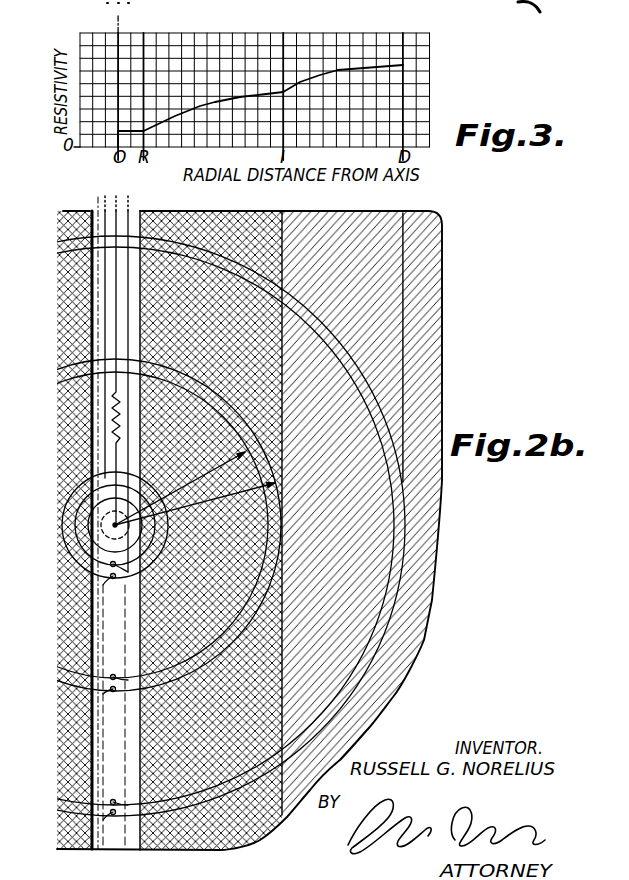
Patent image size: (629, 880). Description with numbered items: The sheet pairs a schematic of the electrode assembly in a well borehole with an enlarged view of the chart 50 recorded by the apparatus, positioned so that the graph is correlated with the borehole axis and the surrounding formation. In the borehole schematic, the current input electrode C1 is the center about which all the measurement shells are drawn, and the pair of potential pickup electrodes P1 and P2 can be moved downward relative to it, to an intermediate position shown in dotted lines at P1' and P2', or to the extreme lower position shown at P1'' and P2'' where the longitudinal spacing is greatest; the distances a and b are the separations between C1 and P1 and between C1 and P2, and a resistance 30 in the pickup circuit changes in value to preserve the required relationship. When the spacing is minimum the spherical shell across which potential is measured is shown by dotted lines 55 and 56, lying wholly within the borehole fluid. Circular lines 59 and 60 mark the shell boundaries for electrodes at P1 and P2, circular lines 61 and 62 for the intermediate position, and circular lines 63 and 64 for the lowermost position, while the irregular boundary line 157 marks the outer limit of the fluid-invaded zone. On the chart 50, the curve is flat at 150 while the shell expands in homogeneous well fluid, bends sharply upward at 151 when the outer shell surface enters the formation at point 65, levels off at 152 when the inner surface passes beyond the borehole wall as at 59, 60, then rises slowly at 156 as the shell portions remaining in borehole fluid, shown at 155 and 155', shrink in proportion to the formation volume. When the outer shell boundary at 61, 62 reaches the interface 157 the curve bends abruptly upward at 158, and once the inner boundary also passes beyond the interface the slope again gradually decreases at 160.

In FIG. 3, the chart 50 is at (383, 40).
In FIG. 3, the spherical shell boundary 55 is at (120, 27).
In FIG. 2B, the spherical shell boundary 55 is at (97, 518).
In FIG. 3, the constant potential curve portion 150 is at (116, 146).
In FIG. 3, the sharp upward bend of curve 151 is at (144, 131).
In FIG. 3, the leveling off of curve 152 is at (202, 101).
In FIG. 3, the slowly rising curve portion 156 is at (250, 95).
In FIG. 3, the abrupt upward bend of curve 158 is at (284, 92).
In FIG. 3, the gradual reduction in slope of curve 160 is at (340, 70).
In FIG. 2B, the resistance 30 is at (113, 420).
In FIG. 2B, the spherical shell boundary 56 is at (92, 502).
In FIG. 2B, the circular line 59 is at (83, 547).
In FIG. 2B, the circular line 60 is at (83, 565).
In FIG. 2B, the circular line 61 is at (212, 402).
In FIG. 2B, the circular line 62 is at (213, 396).
In FIG. 2B, the circular line 63 is at (343, 366).
In FIG. 2B, the circular line 64 is at (376, 364).
In FIG. 2B, the point of shell intersection with borehole wall 65 is at (142, 530).
In FIG. 2B, the shell portion within borehole fluid 155 is at (158, 349).
In FIG. 2B, the shell portion within borehole fluid 155' is at (166, 697).
In FIG. 2B, the irregular boundary line 157 is at (283, 256).
In FIG. 2B, the current input electrode C1 is at (113, 525).
In FIG. 2B, the potential pickup electrode P1 is at (146, 576).
In FIG. 2B, the potential pickup electrode P2 is at (72, 592).
In FIG. 2B, the intermediate position of pickup electrode P1 P1' is at (143, 658).
In FIG. 2B, the intermediate position of pickup electrode P2 P2' is at (69, 702).
In FIG. 2B, the extreme lower position of pickup electrode P1 P1'' is at (146, 783).
In FIG. 2B, the extreme lower position of pickup electrode P2 P2'' is at (69, 824).
In FIG. 2B, the electrode separation distance a is at (180, 488).
In FIG. 2B, the electrode separation distance b is at (195, 504).